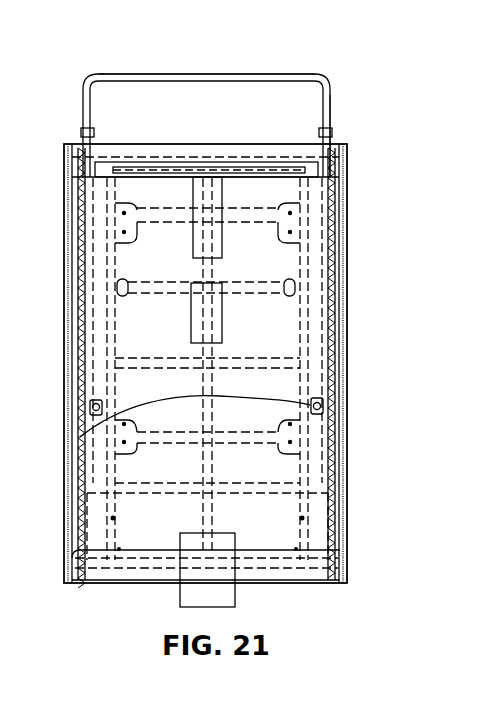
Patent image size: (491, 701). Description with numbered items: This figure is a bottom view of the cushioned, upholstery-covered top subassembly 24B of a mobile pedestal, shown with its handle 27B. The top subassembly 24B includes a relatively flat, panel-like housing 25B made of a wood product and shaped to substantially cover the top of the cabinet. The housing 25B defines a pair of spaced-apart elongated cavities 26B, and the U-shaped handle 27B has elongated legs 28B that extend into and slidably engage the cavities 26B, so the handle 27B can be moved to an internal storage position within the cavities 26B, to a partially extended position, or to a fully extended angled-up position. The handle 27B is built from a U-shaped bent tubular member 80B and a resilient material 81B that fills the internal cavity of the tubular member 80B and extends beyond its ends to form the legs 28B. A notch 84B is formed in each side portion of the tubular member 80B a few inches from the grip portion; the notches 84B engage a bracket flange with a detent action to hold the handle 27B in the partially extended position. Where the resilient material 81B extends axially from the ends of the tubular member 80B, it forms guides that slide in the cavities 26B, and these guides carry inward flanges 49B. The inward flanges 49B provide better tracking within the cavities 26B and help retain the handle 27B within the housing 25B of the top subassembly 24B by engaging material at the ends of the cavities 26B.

The top subassembly 24B is at (63, 129).
The housing 25B is at (67, 323).
The elongated cavities 26B is at (76, 270).
The handle 27B is at (202, 73).
The elongated legs 28B is at (330, 100).
The tubular member 80B is at (279, 73).
The resilient material 81B is at (71, 360).
The notch 84B is at (91, 131).
The inward flanges 49B is at (80, 437).